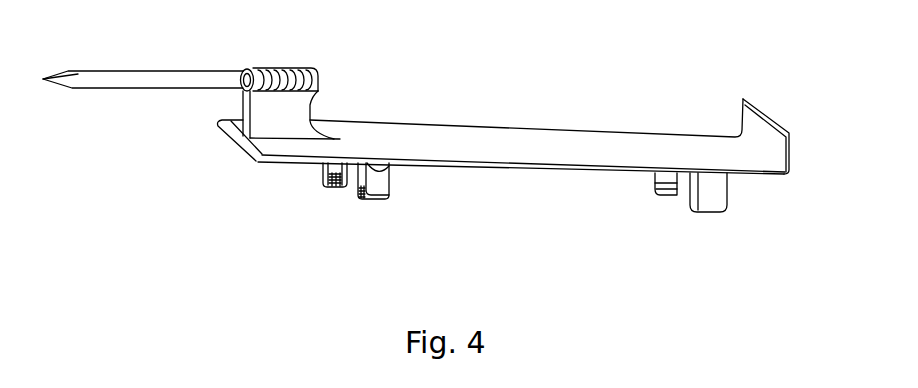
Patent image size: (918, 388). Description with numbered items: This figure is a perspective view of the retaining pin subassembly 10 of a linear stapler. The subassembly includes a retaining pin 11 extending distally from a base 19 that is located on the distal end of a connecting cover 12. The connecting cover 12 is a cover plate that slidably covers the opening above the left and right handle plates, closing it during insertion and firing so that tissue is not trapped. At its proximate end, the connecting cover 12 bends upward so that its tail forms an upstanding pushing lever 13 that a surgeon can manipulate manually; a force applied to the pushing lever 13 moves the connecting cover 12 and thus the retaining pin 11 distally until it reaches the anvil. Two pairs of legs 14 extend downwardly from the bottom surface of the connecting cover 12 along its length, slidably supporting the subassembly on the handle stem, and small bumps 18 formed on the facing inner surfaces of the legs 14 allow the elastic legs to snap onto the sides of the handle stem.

The retaining pin subassembly 10 is at (644, 95).
The retaining pin 11 is at (170, 69).
The connecting cover 12 is at (407, 122).
The pushing lever 13 is at (775, 123).
The legs 14 is at (697, 212).
The bumps 18 is at (325, 179).
The base 19 is at (312, 102).